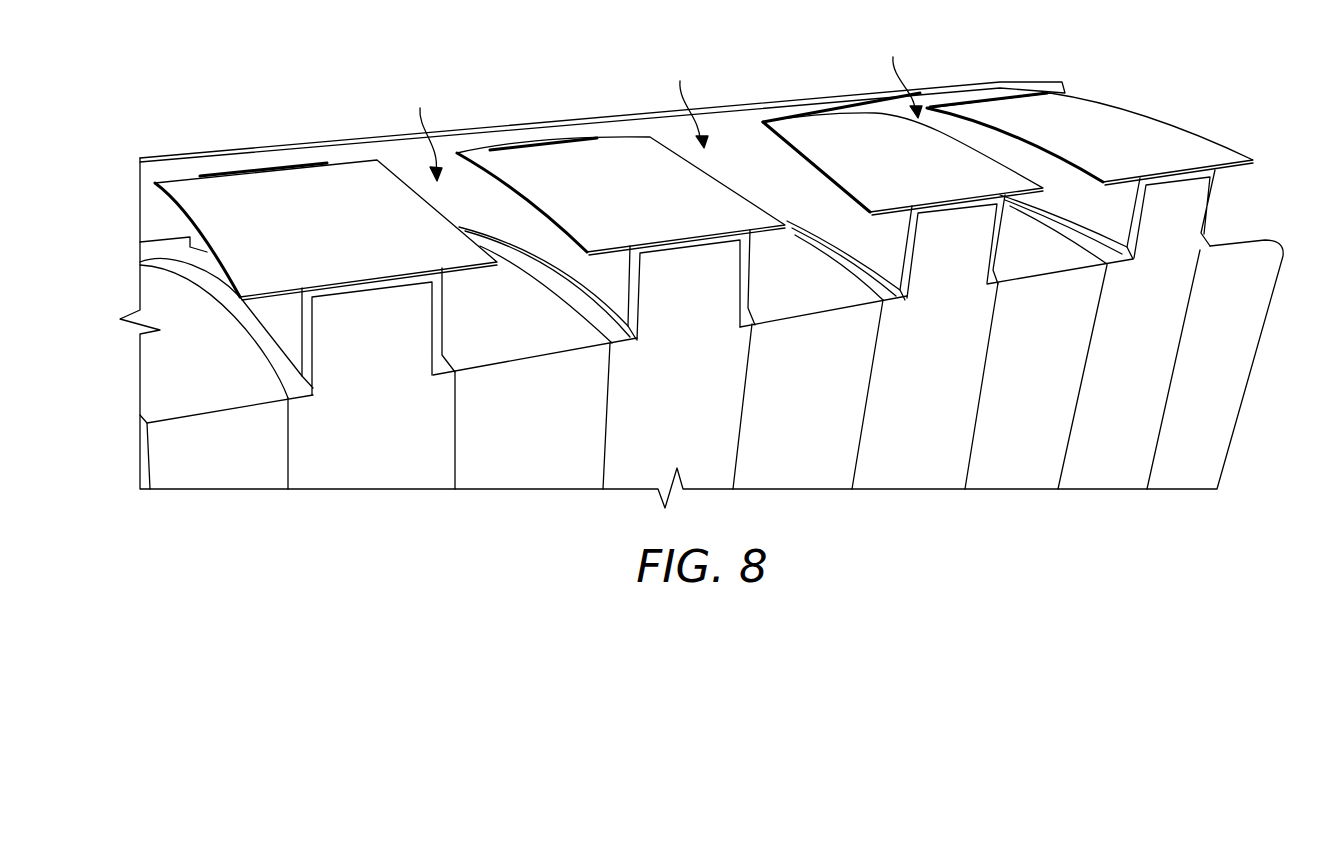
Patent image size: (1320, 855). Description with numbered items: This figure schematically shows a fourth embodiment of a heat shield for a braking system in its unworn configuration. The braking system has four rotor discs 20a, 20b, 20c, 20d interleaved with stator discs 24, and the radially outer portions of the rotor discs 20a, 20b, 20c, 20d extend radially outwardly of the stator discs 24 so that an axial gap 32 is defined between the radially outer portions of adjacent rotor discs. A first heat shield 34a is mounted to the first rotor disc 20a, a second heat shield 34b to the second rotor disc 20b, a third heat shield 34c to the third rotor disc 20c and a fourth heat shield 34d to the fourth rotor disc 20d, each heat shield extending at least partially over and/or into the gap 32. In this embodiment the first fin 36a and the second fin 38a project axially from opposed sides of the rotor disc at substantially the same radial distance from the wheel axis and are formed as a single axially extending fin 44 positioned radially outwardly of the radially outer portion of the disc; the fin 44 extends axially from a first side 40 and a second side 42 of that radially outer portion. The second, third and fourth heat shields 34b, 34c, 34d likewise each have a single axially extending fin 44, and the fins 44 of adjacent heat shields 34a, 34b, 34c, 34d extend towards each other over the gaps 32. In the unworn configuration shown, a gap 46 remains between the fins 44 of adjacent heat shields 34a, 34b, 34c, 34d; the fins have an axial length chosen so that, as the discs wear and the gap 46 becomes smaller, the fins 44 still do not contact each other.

The first rotor disc 20a is at (368, 467).
The second rotor disc 20b is at (660, 433).
The third rotor disc 20c is at (903, 403).
The fourth rotor disc 20d is at (1116, 393).
The stator disc 24 is at (521, 450).
The axial gap 32 is at (548, 340).
The first heat shield 34a is at (372, 282).
The second heat shield 34b is at (687, 243).
The third heat shield 34c is at (940, 211).
The fourth heat shield 34d is at (1158, 178).
The first fin 36a is at (493, 158).
The second fin 38a is at (363, 181).
The first side 40 is at (311, 344).
The second side 42 is at (434, 322).
The single axially extending fin 44 is at (232, 192).
The gap between fins 46 is at (665, 108).